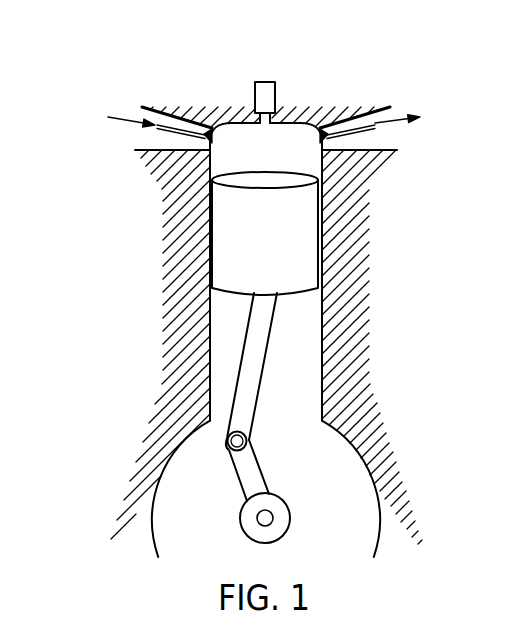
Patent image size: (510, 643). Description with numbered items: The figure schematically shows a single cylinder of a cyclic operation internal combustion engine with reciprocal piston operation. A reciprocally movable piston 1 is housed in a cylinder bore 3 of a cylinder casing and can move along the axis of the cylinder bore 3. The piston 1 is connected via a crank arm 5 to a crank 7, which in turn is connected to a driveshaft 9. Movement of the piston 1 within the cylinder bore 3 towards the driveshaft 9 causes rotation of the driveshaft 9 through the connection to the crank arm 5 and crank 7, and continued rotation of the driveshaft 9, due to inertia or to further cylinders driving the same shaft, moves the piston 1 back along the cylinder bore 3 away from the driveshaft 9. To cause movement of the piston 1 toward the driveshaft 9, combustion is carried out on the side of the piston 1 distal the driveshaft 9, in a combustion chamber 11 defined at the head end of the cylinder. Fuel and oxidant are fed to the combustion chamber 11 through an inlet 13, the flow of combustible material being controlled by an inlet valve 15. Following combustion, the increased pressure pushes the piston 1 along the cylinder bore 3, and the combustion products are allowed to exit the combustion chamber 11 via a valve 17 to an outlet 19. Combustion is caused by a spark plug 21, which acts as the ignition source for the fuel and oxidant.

The piston 1 is at (300, 228).
The cylinder bore 3 is at (343, 297).
The crank arm 5 is at (263, 368).
The crank 7 is at (256, 463).
The driveshaft 9 is at (273, 517).
The combustion chamber 11 is at (297, 140).
The inlet 13 is at (113, 114).
The intake valve 15 is at (163, 130).
The valve 17 is at (365, 133).
The outlet 19 is at (413, 114).
The spark plug 21 is at (265, 80).